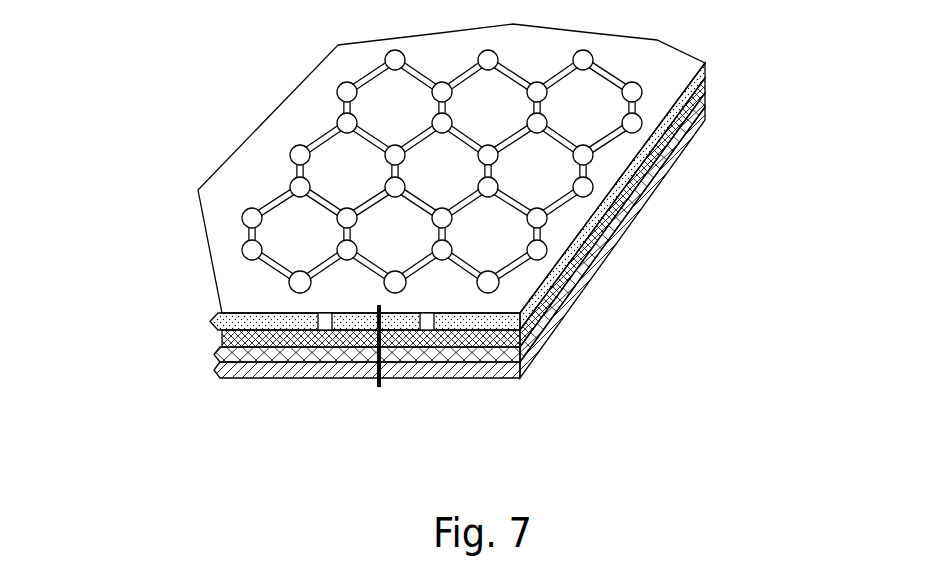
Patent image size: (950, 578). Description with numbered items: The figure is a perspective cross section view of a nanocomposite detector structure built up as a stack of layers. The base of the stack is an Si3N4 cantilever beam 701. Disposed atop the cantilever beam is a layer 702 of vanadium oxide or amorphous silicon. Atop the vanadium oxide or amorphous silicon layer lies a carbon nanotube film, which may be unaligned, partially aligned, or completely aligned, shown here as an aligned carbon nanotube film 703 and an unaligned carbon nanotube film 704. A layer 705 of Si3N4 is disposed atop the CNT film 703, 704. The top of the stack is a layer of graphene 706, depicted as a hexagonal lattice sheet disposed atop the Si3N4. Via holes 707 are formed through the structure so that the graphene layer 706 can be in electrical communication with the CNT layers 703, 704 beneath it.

The Si3N4 cantilever beam 701 is at (474, 279).
The layer of vanadium oxide or amorphous silicon 702 is at (528, 257).
The aligned carbon nanotube film 703 is at (519, 335).
The unaligned carbon nanotube film 704 is at (229, 336).
The Si3N4 layer 705 is at (507, 177).
The graphene layer 706 is at (642, 122).
The via holes 707 is at (424, 323).